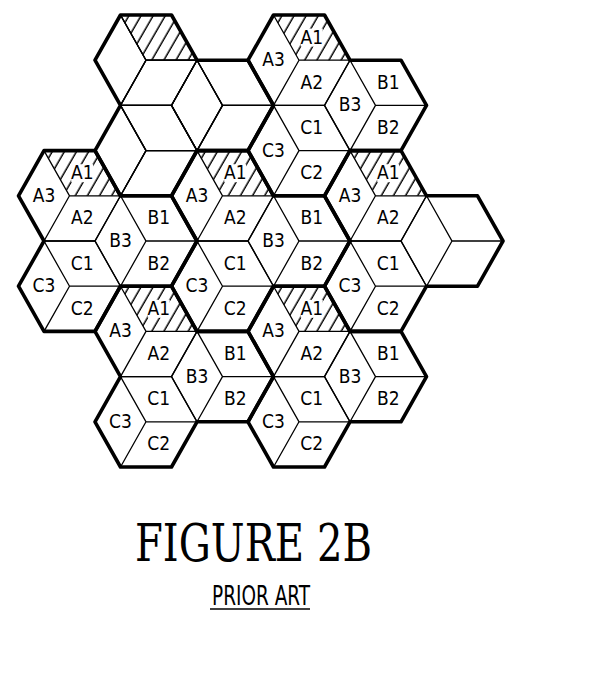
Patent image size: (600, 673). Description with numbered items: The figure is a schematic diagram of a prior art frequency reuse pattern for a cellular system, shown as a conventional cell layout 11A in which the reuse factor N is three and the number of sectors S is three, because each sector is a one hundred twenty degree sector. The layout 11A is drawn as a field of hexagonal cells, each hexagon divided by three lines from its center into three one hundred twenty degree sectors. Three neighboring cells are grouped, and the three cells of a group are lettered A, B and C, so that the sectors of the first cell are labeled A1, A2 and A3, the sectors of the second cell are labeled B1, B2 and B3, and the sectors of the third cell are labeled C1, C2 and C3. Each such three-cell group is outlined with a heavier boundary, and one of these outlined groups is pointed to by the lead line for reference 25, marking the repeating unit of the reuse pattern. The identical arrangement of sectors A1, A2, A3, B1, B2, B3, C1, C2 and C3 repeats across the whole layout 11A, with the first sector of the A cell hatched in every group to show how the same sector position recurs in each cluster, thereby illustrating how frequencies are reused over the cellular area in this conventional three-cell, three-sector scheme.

The cell cluster 25 is at (418, 129).
The conventional cell layout 11A is at (440, 287).
The cell sector A1 is at (159, 37).
The cell sector A2 is at (159, 82).
The cell sector A3 is at (120, 60).
The cell sector B1 is at (235, 82).
The cell sector B2 is at (235, 127).
The cell sector B3 is at (197, 105).
The cell sector C1 is at (159, 127).
The cell sector C2 is at (159, 173).
The cell sector C3 is at (120, 150).